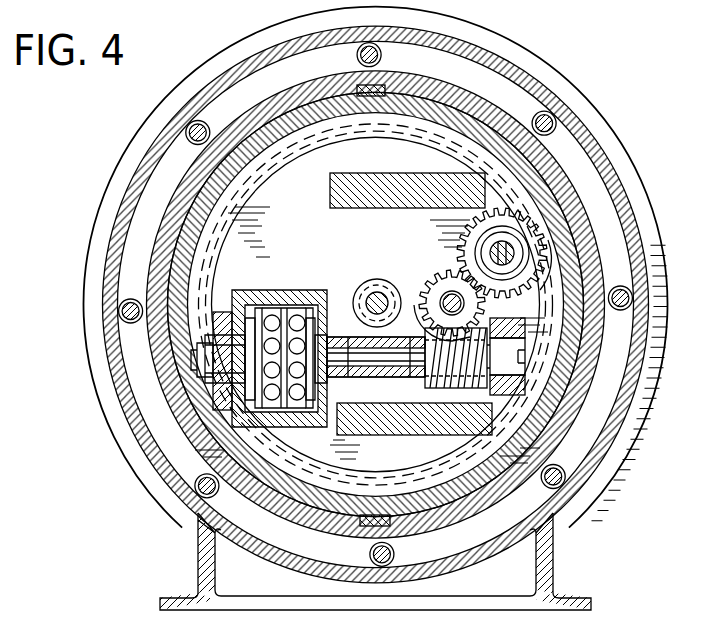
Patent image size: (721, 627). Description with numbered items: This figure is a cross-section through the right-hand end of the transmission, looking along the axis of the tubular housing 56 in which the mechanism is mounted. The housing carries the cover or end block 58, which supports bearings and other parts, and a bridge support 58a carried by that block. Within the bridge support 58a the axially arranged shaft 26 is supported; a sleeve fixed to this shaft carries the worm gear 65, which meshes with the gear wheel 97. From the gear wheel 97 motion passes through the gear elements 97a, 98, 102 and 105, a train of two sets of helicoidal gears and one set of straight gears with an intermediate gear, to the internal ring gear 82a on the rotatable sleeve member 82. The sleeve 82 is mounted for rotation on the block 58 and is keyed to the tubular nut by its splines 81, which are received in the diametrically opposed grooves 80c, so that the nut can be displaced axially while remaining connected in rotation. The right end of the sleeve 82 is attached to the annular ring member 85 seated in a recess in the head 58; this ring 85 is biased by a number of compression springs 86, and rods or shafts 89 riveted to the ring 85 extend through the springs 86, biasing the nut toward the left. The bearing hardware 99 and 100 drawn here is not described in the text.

The shaft 26 is at (368, 292).
The tubular housing 56 is at (185, 490).
The cover or end block 58 is at (336, 240).
The bridge support 58a is at (356, 182).
The worm gear 65 is at (357, 290).
The grooves 80c is at (380, 84).
The splines 81 is at (371, 97).
The rotatable sleeve member 82 is at (318, 500).
The internal ring gear 82a is at (488, 196).
The annular ring member 85 is at (640, 392).
The compression springs 86 is at (568, 120).
The rods or shafts 89 is at (556, 112).
The gear wheel 97 is at (372, 382).
The gear element 97a is at (446, 366).
The gear element 98 is at (440, 282).
The bearing flange 99 is at (210, 385).
The bearing assembly 100 is at (274, 302).
The gear element 102 is at (486, 313).
The gear element 105 is at (520, 218).